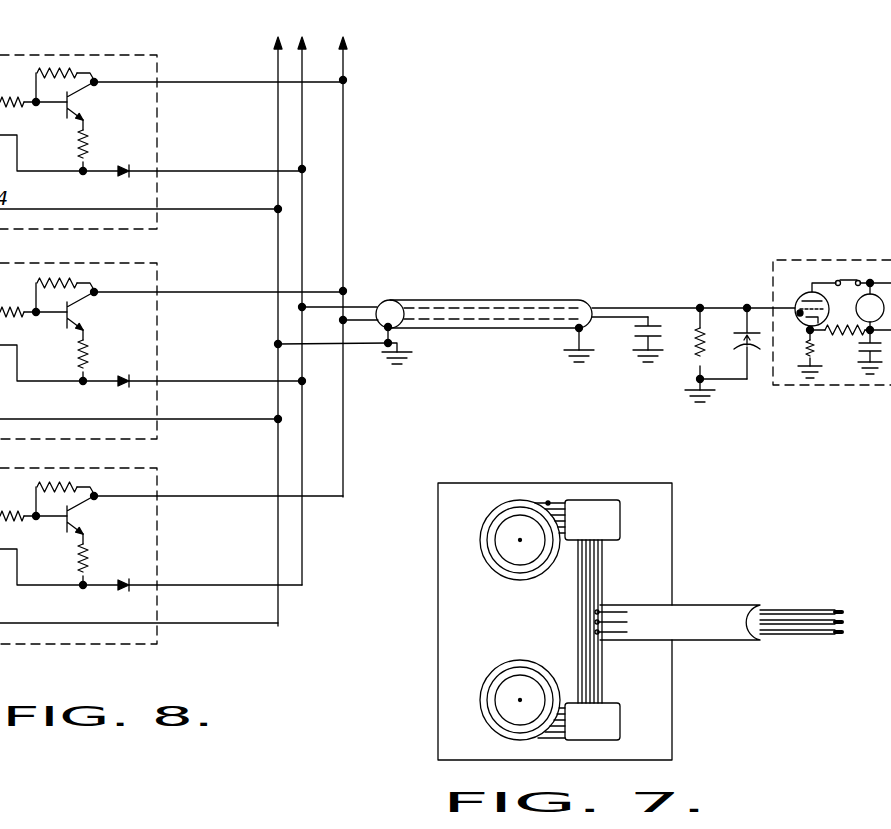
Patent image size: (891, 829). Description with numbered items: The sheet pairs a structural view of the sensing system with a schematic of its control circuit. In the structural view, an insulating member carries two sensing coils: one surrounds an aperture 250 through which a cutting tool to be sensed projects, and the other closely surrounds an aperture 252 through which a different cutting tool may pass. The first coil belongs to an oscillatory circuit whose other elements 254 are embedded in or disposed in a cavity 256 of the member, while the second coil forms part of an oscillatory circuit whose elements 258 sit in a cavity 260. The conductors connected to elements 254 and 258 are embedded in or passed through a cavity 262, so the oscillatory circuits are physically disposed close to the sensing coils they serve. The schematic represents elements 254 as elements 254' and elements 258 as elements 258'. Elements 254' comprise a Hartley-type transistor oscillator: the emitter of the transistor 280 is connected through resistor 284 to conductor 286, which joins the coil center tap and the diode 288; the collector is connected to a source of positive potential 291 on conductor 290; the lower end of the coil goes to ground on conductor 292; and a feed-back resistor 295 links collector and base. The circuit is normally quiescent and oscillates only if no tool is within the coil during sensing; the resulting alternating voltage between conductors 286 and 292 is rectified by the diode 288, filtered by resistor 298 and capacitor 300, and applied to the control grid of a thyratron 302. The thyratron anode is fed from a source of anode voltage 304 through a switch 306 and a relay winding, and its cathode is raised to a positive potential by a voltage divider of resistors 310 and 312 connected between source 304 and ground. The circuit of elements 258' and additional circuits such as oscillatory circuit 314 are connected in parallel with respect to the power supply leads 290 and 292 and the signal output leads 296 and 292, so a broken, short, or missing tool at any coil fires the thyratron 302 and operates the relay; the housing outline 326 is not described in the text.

In FIG. 7, the aperture 250 is at (505, 535).
In FIG. 7, the aperture 252 is at (505, 692).
In FIG. 7, the oscillatory circuit elements 254 is at (613, 498).
In FIG. 8, the oscillator elements 254' is at (109, 132).
In FIG. 7, the cavity 256 is at (549, 503).
In FIG. 7, the oscillatory circuit elements 258 is at (613, 748).
In FIG. 8, the oscillator elements 258' is at (171, 348).
In FIG. 7, the cavity 260 is at (548, 738).
In FIG. 7, the cavity 262 is at (617, 640).
In FIG. 8, the transistor 280 is at (66, 108).
In FIG. 8, the resistor 284 is at (86, 152).
In FIG. 8, the conductor 286 is at (50, 173).
In FIG. 7, the conductor 286 is at (513, 514).
In FIG. 8, the diode 288 is at (125, 178).
In FIG. 8, the conductor 290 is at (200, 83).
In FIG. 8, the source of positive potential 291 is at (634, 332).
In FIG. 8, the conductor 292 is at (208, 210).
In FIG. 8, the resistor 295 is at (58, 58).
In FIG. 8, the signal output lead 296 is at (207, 153).
In FIG. 8, the resistor 298 is at (705, 340).
In FIG. 8, the capacitor 300 is at (740, 350).
In FIG. 8, the thyratron 302 is at (801, 292).
In FIG. 8, the source of anode voltage 304 is at (884, 294).
In FIG. 8, the switch 306 is at (848, 279).
In FIG. 7, the switch 306 is at (515, 668).
In FIG. 8, the resistor 310 is at (838, 337).
In FIG. 8, the resistor 312 is at (802, 346).
In FIG. 8, the oscillatory circuit 314 is at (158, 468).
In FIG. 7, the housing 326 is at (655, 535).